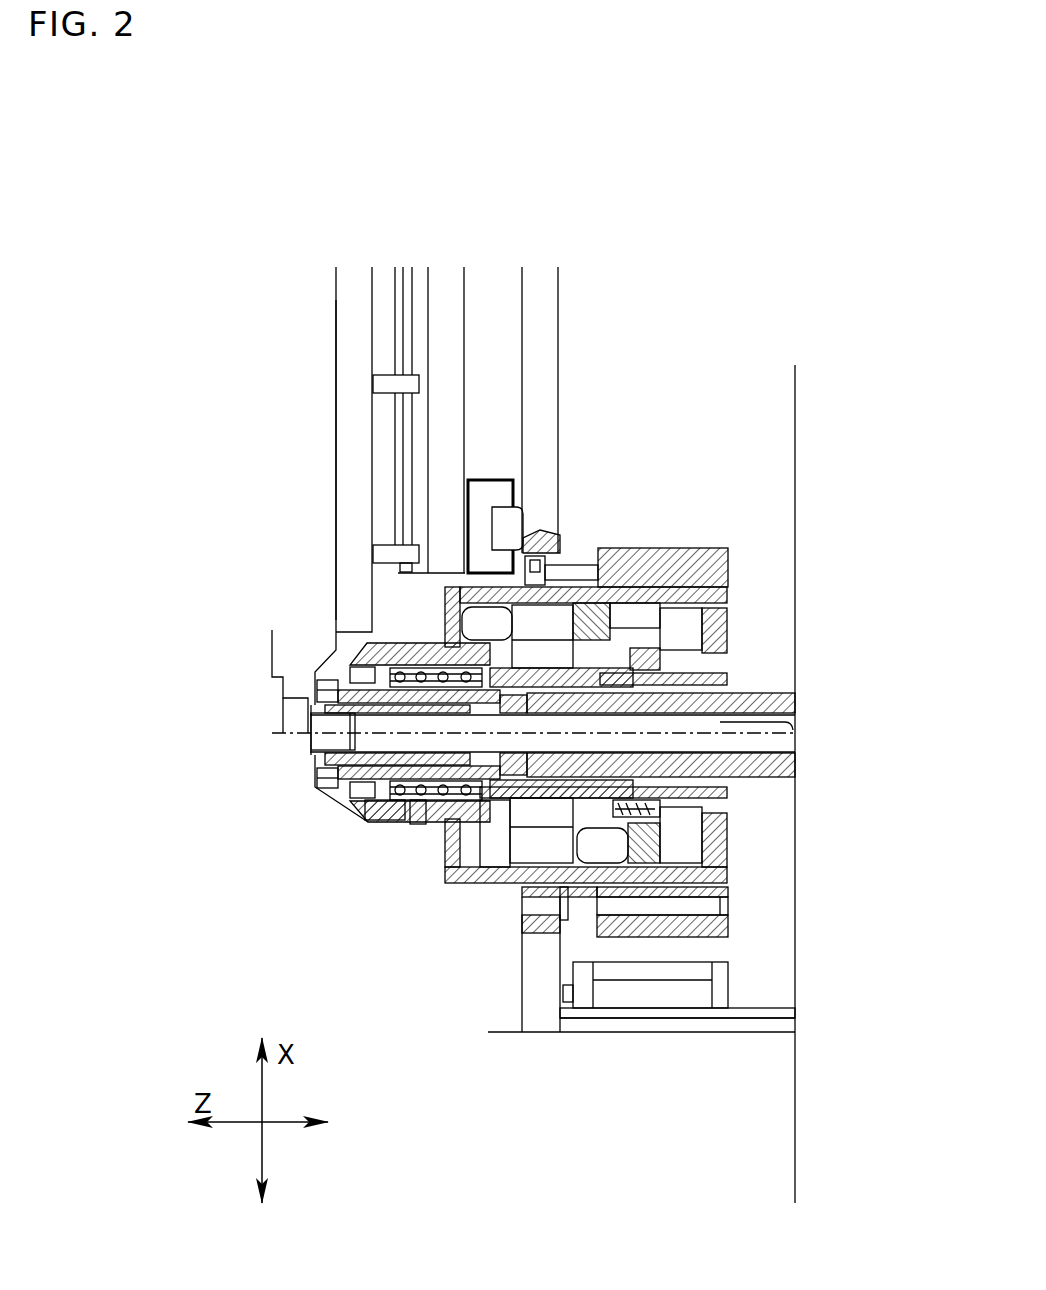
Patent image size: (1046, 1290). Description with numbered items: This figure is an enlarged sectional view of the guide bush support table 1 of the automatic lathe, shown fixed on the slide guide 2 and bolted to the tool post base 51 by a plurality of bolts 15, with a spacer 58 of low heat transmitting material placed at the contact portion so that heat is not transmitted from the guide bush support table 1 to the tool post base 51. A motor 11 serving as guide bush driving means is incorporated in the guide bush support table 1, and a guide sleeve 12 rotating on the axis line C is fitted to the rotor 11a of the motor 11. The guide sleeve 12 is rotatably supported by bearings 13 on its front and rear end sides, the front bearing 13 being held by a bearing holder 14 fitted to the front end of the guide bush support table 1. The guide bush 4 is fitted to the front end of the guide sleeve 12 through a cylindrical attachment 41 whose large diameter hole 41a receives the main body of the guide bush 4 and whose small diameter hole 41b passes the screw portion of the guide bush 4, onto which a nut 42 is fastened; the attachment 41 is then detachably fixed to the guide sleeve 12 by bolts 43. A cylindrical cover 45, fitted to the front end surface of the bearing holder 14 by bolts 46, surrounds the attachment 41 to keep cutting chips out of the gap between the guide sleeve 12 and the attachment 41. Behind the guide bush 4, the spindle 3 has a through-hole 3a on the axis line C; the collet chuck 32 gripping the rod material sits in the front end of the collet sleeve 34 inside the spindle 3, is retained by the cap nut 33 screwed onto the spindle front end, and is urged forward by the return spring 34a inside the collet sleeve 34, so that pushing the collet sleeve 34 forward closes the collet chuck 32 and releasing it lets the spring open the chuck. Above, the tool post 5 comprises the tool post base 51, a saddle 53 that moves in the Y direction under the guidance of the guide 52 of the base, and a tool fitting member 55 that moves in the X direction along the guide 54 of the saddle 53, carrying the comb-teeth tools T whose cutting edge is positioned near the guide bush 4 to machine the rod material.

The guide bush support table 1 is at (737, 557).
The slide guide 2 is at (773, 1003).
The spindle 3 is at (615, 644).
The through-hole 3a is at (797, 733).
The guide bush 4 is at (341, 794).
The tool post 5 is at (404, 448).
The motor 11 is at (578, 593).
The rotor 11a is at (660, 712).
The guide sleeve 12 is at (720, 790).
The bearing 13 is at (413, 645).
The bearing holder 14 is at (443, 883).
The bolt 15 is at (580, 573).
The collet chuck 32 is at (470, 887).
The cap nut 33 is at (517, 903).
The collet sleeve 34 is at (795, 760).
The return spring 34a is at (683, 630).
The attachment 41 is at (353, 795).
The large diameter hole 41a is at (317, 787).
The small diameter hole 41b is at (340, 793).
The nut 42 is at (422, 820).
The bolt 43 is at (305, 698).
The cover 45 is at (360, 802).
The bolt 46 is at (393, 827).
The tool post base 51 is at (558, 300).
The guide 52 is at (500, 513).
The saddle 53 is at (451, 276).
The guide 54 is at (410, 276).
The tool fitting member 55 is at (343, 405).
The spacer 58 is at (567, 553).
The axis line C is at (763, 697).
The tool T is at (270, 642).